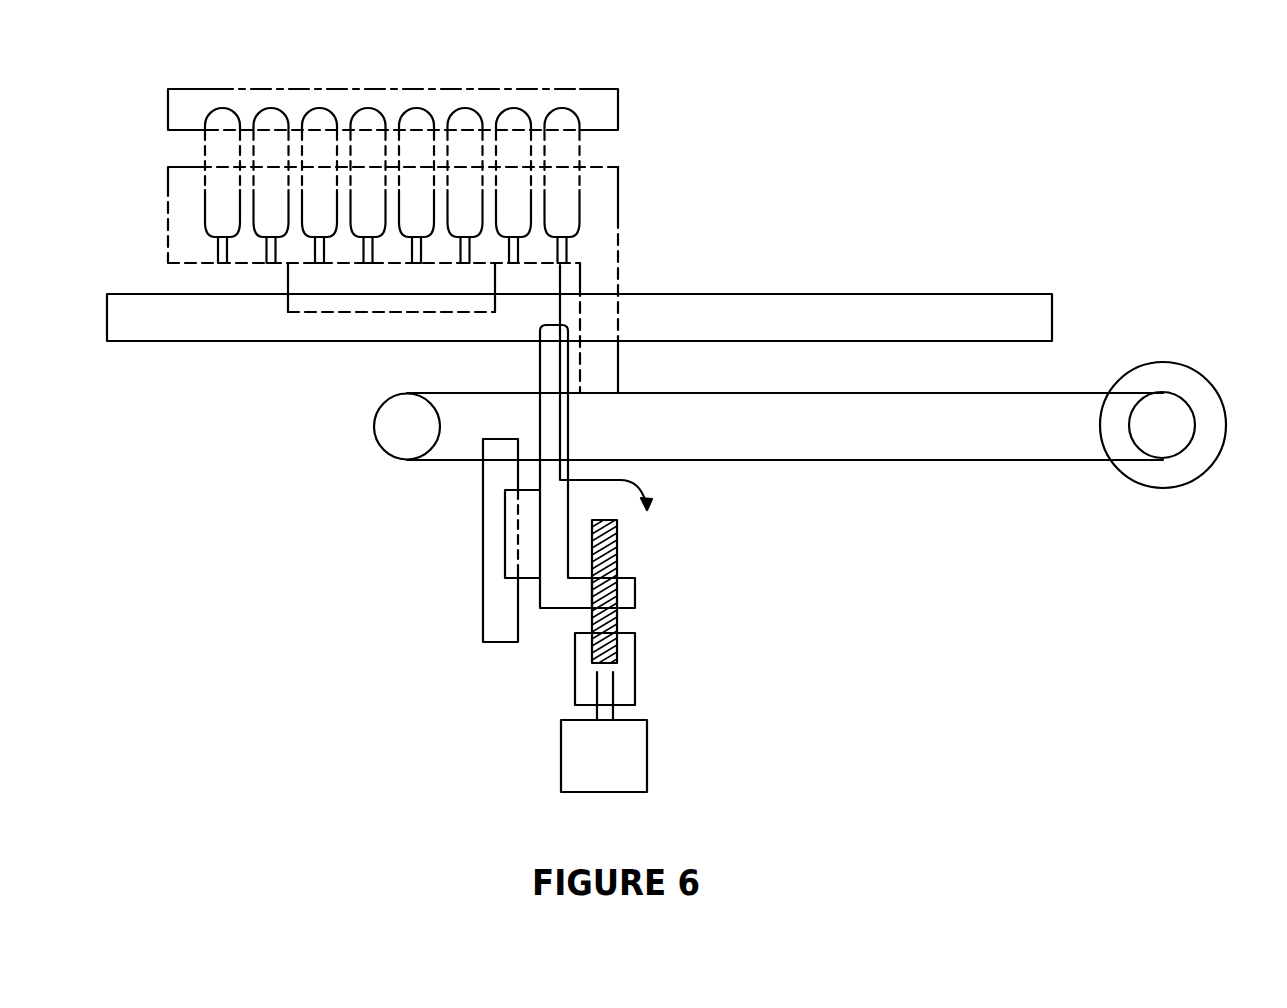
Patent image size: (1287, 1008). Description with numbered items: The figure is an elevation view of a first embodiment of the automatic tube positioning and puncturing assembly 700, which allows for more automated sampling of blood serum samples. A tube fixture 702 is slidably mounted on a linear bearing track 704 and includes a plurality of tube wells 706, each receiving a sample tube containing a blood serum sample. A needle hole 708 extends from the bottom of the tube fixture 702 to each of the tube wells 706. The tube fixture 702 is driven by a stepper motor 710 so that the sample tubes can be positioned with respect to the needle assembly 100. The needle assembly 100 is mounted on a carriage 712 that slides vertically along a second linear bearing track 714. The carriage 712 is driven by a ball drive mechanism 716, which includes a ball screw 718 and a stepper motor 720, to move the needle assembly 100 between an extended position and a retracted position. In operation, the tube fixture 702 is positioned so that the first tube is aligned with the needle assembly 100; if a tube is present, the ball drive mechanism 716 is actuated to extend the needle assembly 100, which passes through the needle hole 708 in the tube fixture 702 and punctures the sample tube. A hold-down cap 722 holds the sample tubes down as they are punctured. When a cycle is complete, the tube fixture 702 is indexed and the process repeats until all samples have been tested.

The tube positioning and puncturing assembly 700 is at (145, 119).
The tube fixture 702 is at (175, 185).
The linear bearing track 704 is at (173, 340).
The tube wells 706 is at (582, 205).
The needle hole 708 is at (217, 252).
The stepper motor 710 is at (1185, 380).
The carriage 712 is at (512, 563).
The second linear bearing track 714 is at (491, 495).
The ball drive mechanism 716 is at (718, 618).
The ball screw 718 is at (613, 546).
The stepper motor 720 is at (640, 755).
The hold-down cap 722 is at (596, 92).
The needle assembly 100 is at (548, 369).